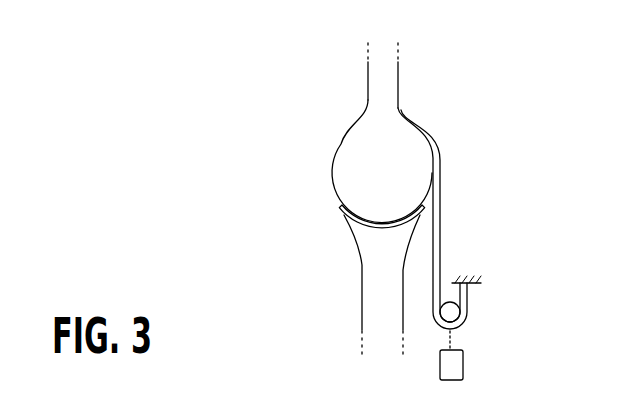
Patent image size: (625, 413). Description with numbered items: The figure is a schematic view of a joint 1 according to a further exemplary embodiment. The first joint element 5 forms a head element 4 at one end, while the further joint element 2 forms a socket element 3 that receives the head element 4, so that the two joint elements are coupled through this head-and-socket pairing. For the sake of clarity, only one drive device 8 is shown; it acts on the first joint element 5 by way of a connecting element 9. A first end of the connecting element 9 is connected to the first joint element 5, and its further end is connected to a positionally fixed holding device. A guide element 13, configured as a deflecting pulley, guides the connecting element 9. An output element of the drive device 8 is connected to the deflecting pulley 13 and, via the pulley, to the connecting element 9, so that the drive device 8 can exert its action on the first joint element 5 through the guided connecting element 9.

The joint 1 is at (285, 245).
The further joint element 2 is at (368, 293).
The socket element 3 is at (365, 242).
The head element 4 is at (415, 158).
The first joint element 5 is at (388, 93).
The drive device 8 is at (458, 365).
The connecting element 9 is at (440, 244).
The guide element 13 is at (454, 311).